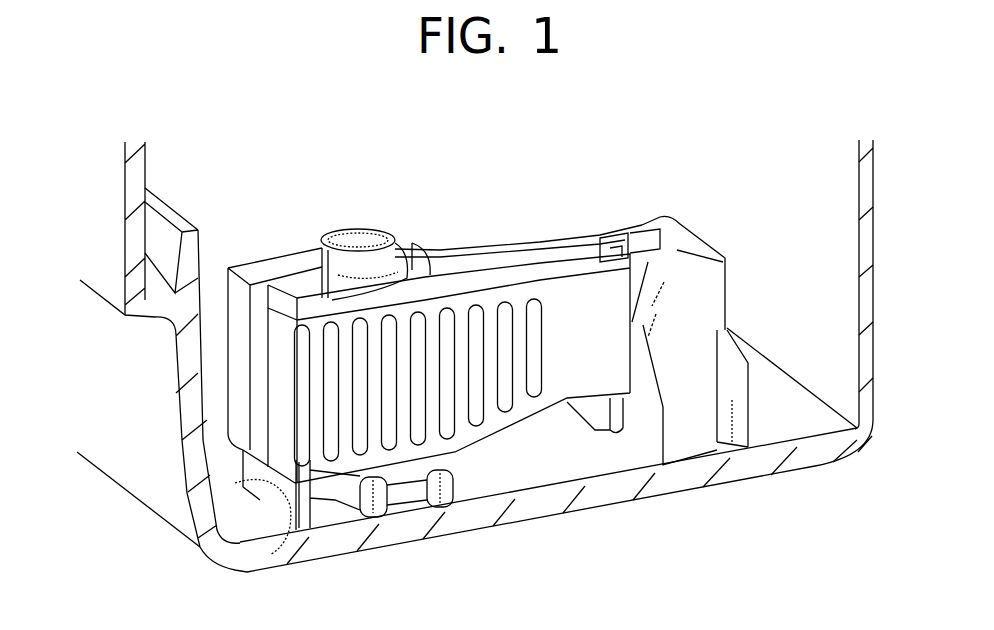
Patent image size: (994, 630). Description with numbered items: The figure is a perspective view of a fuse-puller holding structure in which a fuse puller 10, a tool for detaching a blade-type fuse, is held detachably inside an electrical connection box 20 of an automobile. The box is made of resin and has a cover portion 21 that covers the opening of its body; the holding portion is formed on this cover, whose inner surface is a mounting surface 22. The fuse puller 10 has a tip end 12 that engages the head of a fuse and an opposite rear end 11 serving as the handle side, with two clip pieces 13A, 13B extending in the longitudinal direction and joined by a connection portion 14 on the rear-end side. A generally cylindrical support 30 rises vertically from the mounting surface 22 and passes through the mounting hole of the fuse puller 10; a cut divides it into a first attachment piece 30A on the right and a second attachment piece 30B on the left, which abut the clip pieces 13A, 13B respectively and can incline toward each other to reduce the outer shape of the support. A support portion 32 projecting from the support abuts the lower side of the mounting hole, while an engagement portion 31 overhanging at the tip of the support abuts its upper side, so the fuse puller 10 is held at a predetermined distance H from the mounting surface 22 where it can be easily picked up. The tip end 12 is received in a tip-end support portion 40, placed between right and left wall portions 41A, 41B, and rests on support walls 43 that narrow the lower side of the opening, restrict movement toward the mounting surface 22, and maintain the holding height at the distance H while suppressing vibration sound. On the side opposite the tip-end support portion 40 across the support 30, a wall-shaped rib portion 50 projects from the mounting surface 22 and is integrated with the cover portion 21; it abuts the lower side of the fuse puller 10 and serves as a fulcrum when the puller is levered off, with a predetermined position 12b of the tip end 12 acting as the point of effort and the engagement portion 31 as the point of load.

The fuse puller 10 is at (527, 242).
The rear end 11 is at (273, 257).
The tip end 12 is at (585, 232).
The predetermined position of the tip end 12b is at (567, 400).
The clip piece 13A is at (237, 378).
The clip piece 13B is at (247, 443).
The connection portion 14 is at (428, 272).
The electrical connection box 20 is at (246, 172).
The cover portion 21 is at (810, 458).
The mounting surface 22 is at (820, 433).
The support 30 is at (413, 170).
The first attachment piece 30A is at (333, 230).
The second attachment piece 30B is at (367, 230).
The engagement portion 31 is at (317, 252).
The support portion 32 is at (395, 490).
The tip-end support portion 40 is at (683, 227).
The wall portion 41A is at (638, 220).
The wall portion 41B is at (720, 307).
The support walls 43 is at (595, 430).
The rib portion 50 is at (257, 527).
The predetermined distance H is at (250, 468).